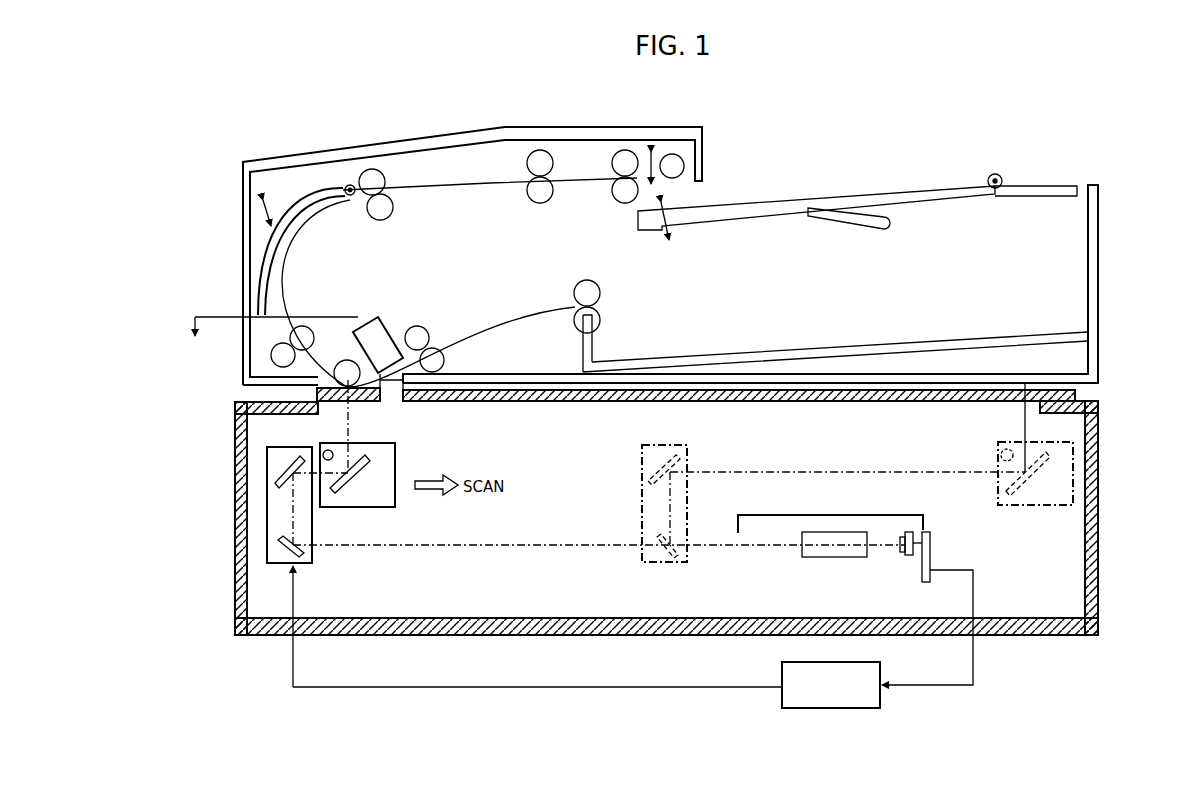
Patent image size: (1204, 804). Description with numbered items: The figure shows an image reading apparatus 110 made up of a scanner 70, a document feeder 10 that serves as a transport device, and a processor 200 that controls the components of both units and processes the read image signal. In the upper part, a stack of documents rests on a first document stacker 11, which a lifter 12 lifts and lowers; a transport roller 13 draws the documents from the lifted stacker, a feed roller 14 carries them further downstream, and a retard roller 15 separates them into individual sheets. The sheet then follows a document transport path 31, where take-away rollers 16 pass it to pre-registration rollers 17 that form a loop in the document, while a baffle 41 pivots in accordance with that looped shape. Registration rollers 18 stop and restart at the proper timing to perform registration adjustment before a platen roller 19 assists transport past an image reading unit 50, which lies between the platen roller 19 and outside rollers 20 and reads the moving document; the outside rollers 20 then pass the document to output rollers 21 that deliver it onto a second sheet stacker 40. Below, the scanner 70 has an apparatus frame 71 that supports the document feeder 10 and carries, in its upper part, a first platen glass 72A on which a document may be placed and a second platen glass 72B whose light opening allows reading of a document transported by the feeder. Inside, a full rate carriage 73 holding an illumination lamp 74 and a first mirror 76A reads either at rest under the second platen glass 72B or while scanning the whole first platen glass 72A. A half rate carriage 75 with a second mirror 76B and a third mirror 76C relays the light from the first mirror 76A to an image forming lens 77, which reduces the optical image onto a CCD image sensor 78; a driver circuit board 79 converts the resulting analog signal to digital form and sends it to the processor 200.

The document feeder 10 is at (878, 126).
The image reading apparatus 110 is at (1126, 180).
The first document stacker 11 is at (795, 206).
The lifter 12 is at (846, 230).
The transport roller 13 is at (686, 160).
The feed roller 14 is at (622, 150).
The retard roller 15 is at (640, 190).
The take-away rollers 16 is at (524, 158).
The pre-registration rollers 17 is at (396, 216).
The registration rollers 18 is at (308, 318).
The platen roller 19 is at (348, 360).
The outside rollers 20 is at (430, 323).
The output rollers 21 is at (606, 286).
The document transport path 31 is at (457, 184).
The second sheet stacker 40 is at (900, 336).
The baffle 41 is at (300, 206).
The image reading unit 50 is at (390, 326).
The scanner 70 is at (666, 546).
The apparatus frame 71 is at (1000, 637).
The first platen glass 72A is at (822, 399).
The second platen glass 72B is at (358, 402).
The full rate carriage 73 is at (396, 495).
The illumination lamp 74 is at (330, 449).
The half rate carriage 75 is at (313, 562).
The first mirror 76A is at (352, 494).
The second mirror 76B is at (290, 460).
The third mirror 76C is at (286, 556).
The image forming lens 77 is at (802, 556).
The CCD image sensor 78 is at (904, 556).
The driver circuit board 79 is at (931, 555).
The processor 200 is at (782, 668).